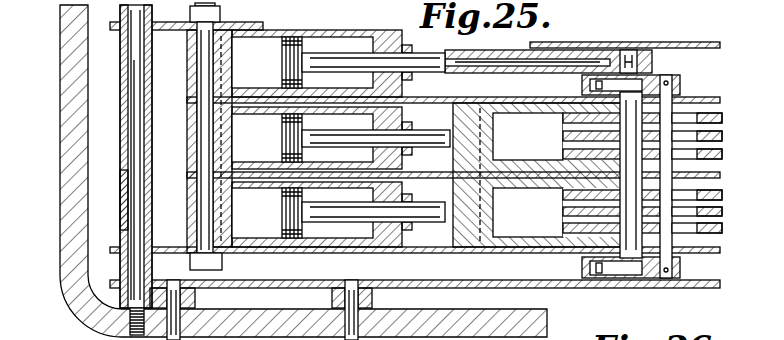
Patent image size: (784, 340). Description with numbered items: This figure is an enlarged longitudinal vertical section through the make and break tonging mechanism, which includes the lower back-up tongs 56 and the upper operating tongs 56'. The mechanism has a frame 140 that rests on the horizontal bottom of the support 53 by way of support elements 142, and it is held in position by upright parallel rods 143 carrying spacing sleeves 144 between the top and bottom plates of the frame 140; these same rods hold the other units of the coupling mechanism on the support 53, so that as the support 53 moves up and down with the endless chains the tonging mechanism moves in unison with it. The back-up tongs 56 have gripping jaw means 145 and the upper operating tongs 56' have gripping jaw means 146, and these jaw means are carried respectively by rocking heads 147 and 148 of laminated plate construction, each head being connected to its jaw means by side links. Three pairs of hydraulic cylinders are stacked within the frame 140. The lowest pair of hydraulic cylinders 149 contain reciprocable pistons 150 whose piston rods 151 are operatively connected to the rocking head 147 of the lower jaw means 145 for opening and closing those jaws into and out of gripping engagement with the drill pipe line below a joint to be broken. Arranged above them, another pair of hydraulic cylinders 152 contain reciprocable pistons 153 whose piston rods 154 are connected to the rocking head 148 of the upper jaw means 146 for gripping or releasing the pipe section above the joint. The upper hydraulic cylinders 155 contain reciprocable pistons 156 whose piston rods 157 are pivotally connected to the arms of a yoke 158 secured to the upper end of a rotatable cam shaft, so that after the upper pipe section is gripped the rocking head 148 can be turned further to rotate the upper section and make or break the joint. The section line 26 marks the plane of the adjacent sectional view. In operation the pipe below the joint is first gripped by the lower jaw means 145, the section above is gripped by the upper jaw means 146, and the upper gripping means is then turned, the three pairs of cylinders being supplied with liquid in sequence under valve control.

The section line 26— 26 is at (215, 64).
The support 53 is at (68, 143).
The lower back-up tongs 56 is at (599, 232).
The upper operating tongs 56' is at (580, 137).
The frame 140 is at (316, 250).
The support elements 142 is at (195, 300).
The upright parallel rods 143 is at (126, 223).
The spacing sleeves 144 is at (120, 176).
The gripping jaw means 145 is at (722, 230).
The gripping jaw means 146 is at (722, 136).
The rocking head 147 is at (560, 226).
The rocking head 148 is at (572, 129).
The hydraulic cylinders 149 is at (190, 222).
The pistons 150 is at (290, 216).
The piston rods 151 is at (420, 212).
The hydraulic cylinders 152 is at (187, 134).
The pistons 153 is at (290, 140).
The piston rods 154 is at (420, 137).
The upper hydraulic cylinders 155 is at (320, 31).
The pistons 156 is at (290, 68).
The piston rods 157 is at (431, 63).
The yoke 158 is at (612, 62).